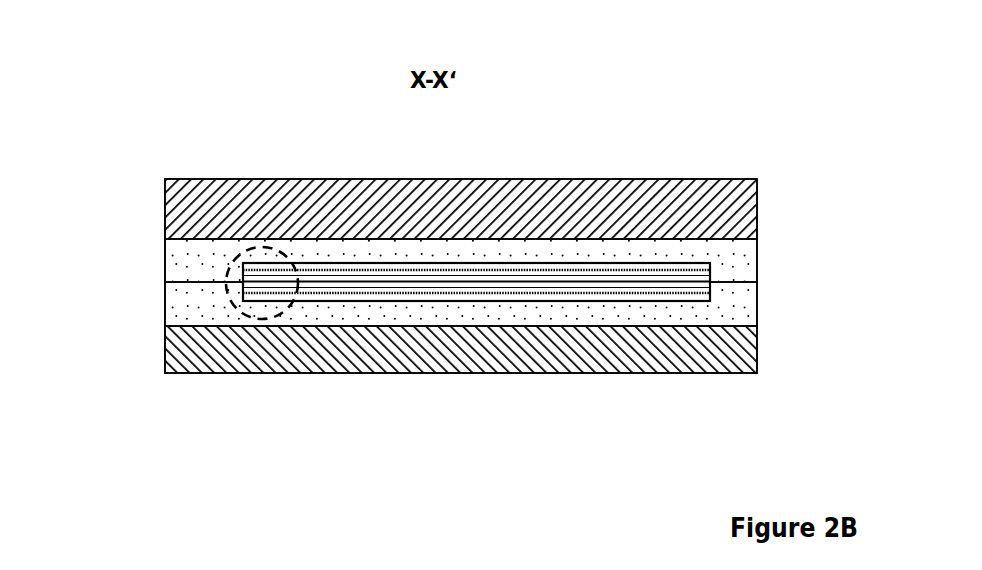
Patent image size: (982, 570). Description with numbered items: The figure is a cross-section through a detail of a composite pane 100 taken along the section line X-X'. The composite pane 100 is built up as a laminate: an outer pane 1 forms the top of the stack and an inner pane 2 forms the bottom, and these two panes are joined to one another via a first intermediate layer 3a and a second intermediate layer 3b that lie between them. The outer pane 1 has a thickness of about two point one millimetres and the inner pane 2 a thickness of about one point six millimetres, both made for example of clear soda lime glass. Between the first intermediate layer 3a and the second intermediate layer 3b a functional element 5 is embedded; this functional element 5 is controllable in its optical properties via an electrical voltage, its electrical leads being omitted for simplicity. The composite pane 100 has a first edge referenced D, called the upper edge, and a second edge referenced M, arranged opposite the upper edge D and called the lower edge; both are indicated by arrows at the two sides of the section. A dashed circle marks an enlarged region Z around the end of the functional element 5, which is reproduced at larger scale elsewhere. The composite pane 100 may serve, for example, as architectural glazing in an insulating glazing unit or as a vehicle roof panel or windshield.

The composite pane 100 is at (212, 113).
The outer pane 1 is at (178, 179).
The inner pane 2 is at (243, 373).
The first intermediate layer 3a is at (734, 257).
The second intermediate layer 3b is at (743, 313).
The functional element 5 is at (528, 283).
The enlarged region Z is at (280, 318).
The lower edge M is at (164, 192).
The upper edge D is at (761, 197).